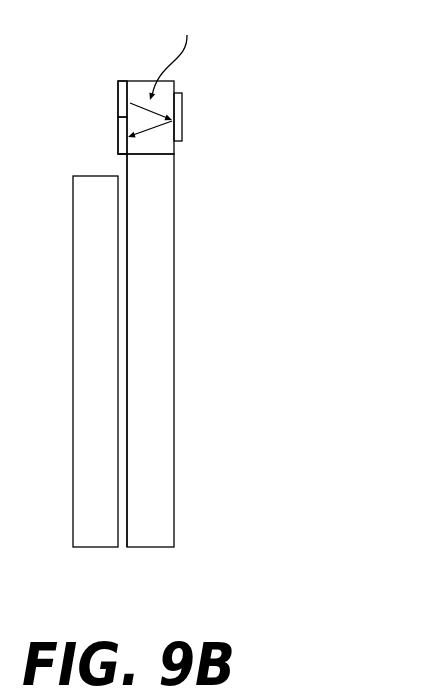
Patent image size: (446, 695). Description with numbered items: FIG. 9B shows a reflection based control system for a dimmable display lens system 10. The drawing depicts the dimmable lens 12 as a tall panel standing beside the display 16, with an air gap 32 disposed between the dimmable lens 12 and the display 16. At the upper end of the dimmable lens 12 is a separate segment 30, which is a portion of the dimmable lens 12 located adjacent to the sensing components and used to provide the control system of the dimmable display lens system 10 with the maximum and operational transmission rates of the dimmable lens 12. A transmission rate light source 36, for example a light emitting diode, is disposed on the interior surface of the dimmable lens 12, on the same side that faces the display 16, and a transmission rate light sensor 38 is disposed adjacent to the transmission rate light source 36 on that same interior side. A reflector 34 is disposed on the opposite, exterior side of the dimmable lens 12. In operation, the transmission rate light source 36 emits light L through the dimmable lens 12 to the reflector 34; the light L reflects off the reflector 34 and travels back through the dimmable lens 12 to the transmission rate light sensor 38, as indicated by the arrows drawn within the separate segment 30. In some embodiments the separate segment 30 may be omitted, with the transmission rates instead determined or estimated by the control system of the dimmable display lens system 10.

The dimmable display lens system 10 is at (333, 50).
The dimmable lens 12 is at (150, 547).
The display 16 is at (93, 547).
The separate segment 30 is at (158, 145).
The air gap 32 is at (122, 547).
The reflector 34 is at (182, 117).
The transmission rate light source 36 is at (118, 100).
The transmission rate light sensor 38 is at (118, 132).
The light L is at (171, 55).